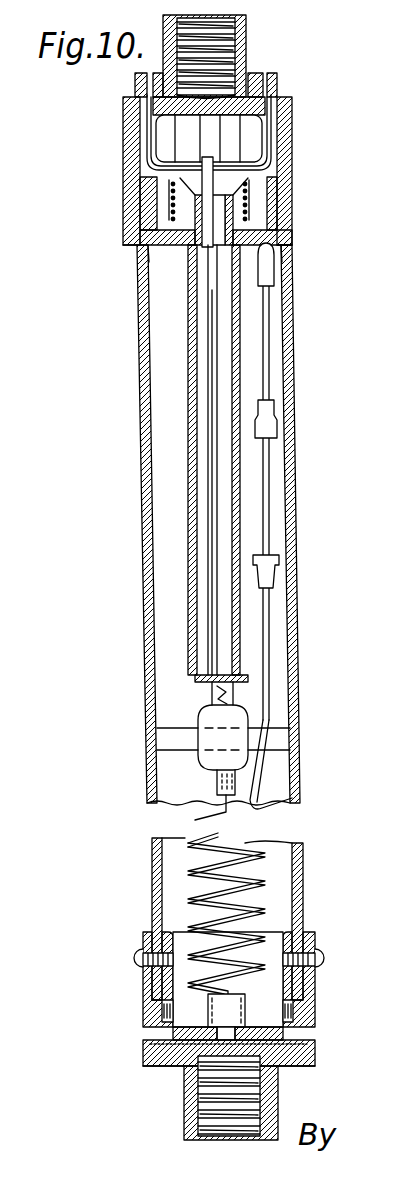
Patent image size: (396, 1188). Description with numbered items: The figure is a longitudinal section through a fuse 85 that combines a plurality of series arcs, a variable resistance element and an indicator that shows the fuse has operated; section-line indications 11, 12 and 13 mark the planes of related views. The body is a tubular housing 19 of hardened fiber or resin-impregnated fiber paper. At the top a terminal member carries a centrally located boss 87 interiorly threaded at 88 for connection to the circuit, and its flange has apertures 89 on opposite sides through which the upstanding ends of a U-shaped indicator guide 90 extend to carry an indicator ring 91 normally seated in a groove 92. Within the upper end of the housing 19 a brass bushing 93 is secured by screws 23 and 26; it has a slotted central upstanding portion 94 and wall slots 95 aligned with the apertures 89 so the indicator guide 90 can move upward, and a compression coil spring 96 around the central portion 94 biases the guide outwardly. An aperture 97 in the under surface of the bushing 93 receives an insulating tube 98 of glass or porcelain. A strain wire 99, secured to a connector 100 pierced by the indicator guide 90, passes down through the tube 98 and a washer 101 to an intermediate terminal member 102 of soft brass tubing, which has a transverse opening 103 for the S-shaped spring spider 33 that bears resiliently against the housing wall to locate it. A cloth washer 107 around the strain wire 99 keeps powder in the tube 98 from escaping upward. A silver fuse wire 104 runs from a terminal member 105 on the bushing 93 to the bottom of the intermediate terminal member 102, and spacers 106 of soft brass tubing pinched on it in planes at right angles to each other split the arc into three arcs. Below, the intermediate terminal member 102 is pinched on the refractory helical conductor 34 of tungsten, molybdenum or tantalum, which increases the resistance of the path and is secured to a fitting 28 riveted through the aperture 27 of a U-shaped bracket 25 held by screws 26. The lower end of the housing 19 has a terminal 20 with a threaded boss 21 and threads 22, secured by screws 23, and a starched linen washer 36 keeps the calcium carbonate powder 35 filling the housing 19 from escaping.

The section line 11 is at (236, 22).
The section line 12 is at (101, 160).
The section line 13 is at (130, 905).
The housing 19 is at (140, 517).
The terminal 20 is at (306, 988).
The boss 21 is at (280, 1094).
The interior threads 22 is at (200, 1116).
The screws 23 is at (141, 967).
The U-shaped bracket 25 is at (290, 1034).
The screws 26 is at (162, 1013).
The aperture 27 is at (178, 1069).
The fitting 28 is at (220, 1013).
The S-shaped spring spider 33 is at (178, 740).
The conductor 34 is at (265, 886).
The powder 35 is at (168, 857).
The starched linen washers 36 is at (302, 1048).
The fuse 85 is at (330, 329).
The boss 87 is at (246, 54).
The interior threads 88 is at (240, 28).
The apertures 89 is at (135, 105).
The U-shaped indicator guide 90 is at (267, 112).
The indicator ring 91 is at (270, 96).
The groove 92 is at (278, 100).
The brass bushing 93 is at (150, 214).
The upstanding portion 94 is at (250, 193).
The slots 95 is at (395, 591).
The compression coil spring 96 is at (252, 209).
The aperture 97 is at (185, 249).
The tube 98 is at (188, 347).
The strain wire 99 is at (215, 402).
The connector 100 is at (206, 224).
The washer 101 is at (198, 678).
The intermediate terminal member 102 is at (212, 701).
The transverse opening 103 is at (200, 754).
The fuse wire 104 is at (272, 371).
The terminal member 105 is at (275, 269).
The spacers 106 is at (268, 428).
The washer 107 is at (190, 262).